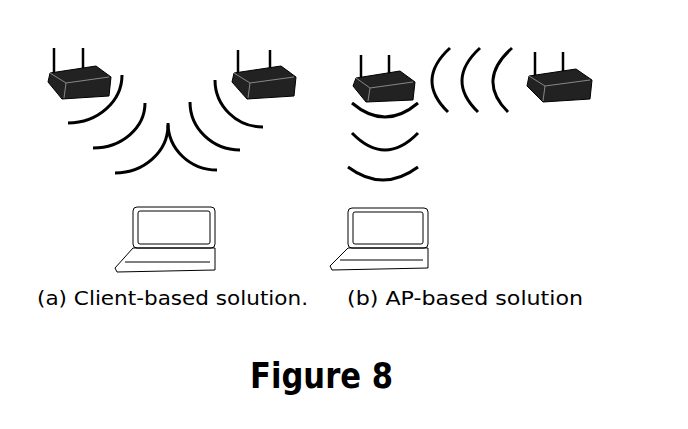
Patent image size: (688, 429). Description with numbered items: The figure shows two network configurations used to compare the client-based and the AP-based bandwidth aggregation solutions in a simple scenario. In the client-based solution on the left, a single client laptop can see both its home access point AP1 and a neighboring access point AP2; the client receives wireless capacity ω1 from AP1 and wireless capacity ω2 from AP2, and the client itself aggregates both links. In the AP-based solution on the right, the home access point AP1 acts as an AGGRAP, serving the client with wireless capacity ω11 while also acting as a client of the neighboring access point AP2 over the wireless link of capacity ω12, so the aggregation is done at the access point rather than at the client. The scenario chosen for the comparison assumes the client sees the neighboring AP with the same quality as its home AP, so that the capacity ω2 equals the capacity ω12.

The access point AP1 is at (231, 59).
The neighboring access point AP2 is at (412, 59).
The wireless capacity from AP1 to its client 1 is at (115, 124).
The wireless capacity from AP2 to the client 2 is at (222, 126).
The wireless capacity from AP1 to its clients 11 is at (405, 150).
The wireless capacity from AP2 to AP1 12 is at (472, 101).